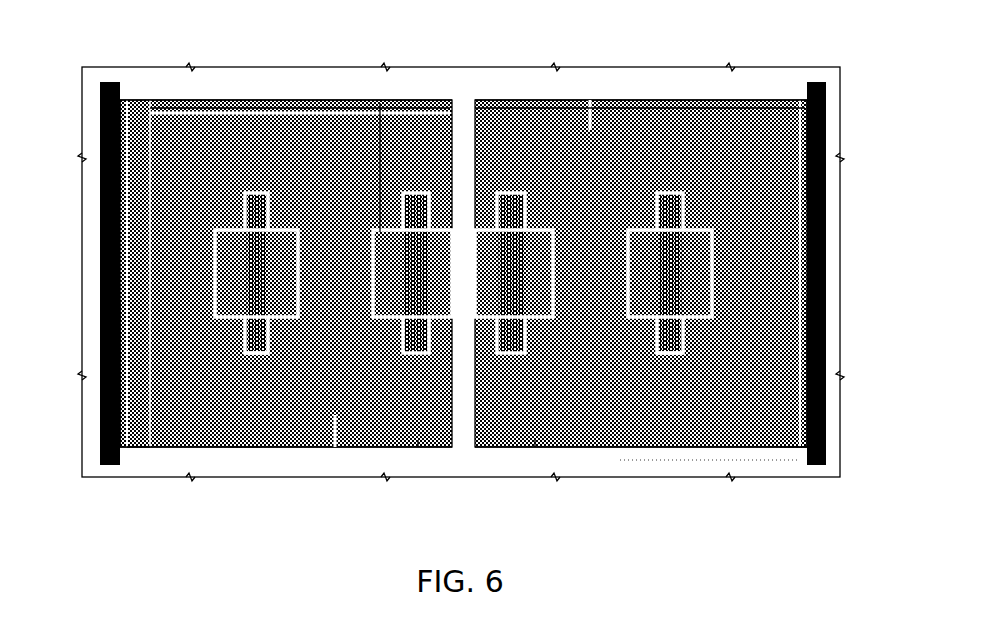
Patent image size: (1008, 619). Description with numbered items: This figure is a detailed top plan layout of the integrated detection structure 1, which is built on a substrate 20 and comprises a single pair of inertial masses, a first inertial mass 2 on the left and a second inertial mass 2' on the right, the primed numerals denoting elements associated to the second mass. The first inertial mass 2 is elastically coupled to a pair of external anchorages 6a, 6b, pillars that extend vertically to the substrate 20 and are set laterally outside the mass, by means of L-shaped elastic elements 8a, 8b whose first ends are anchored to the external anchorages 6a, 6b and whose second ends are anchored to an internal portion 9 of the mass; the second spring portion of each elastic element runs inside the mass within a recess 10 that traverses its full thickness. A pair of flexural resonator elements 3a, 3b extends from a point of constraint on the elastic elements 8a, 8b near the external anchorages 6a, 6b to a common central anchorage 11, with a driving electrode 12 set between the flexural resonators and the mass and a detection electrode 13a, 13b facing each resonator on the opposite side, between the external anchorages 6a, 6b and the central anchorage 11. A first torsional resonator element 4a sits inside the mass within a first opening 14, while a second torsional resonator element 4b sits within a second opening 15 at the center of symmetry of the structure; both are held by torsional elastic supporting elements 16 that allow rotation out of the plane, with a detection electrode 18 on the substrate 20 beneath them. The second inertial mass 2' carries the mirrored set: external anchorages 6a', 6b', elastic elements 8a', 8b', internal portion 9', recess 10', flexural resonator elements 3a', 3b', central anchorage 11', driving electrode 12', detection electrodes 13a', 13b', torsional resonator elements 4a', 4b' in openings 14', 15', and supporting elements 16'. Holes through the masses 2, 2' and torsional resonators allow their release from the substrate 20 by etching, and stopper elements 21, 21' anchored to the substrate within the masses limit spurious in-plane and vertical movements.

The integrated detection structure 1 is at (848, 58).
The first inertial mass 2 is at (286, 239).
The second inertial mass 2' is at (641, 234).
The flexural resonator element 3a is at (86, 373).
The flexural resonator element 3a' is at (845, 373).
The flexural resonator element 3b is at (96, 273).
The flexural resonator element 3b' is at (847, 273).
The first torsional resonator element 4a is at (271, 435).
The first torsional resonator element 4a' is at (629, 438).
The second torsional resonator element 4b is at (337, 187).
The second torsional resonator element 4b' is at (586, 187).
The external anchorage 6a is at (104, 483).
The external anchorage 6a' is at (817, 488).
The external anchorage 6b is at (101, 236).
The external anchorage 6b' is at (825, 237).
The elastic element 8a is at (286, 473).
The elastic element 8a' is at (641, 493).
The elastic element 8b is at (286, 59).
The elastic element 8b' is at (641, 61).
The internal portion 9 is at (333, 273).
The internal portion 9' is at (593, 273).
The recess 10 is at (300, 68).
The recess 10' is at (606, 75).
The central anchorage 11 is at (81, 270).
The central anchorage 11' is at (850, 262).
The driving electrode 12 is at (144, 487).
The driving electrode 12' is at (786, 491).
The detection electrode 13a is at (80, 373).
The detection electrode 13a' is at (851, 373).
The detection electrode 13b is at (78, 150).
The detection electrode 13b' is at (850, 150).
The first opening 14 is at (86, 240).
The first opening 14' is at (851, 295).
The second opening 15 is at (362, 132).
The second opening 15' is at (460, 239).
The elastic supporting element 16 is at (417, 477).
The elastic supporting element 16' is at (601, 468).
The detection electrode 18 is at (242, 435).
The substrate 20 is at (718, 457).
The stopper element 21 is at (300, 277).
The stopper element 21' is at (640, 295).